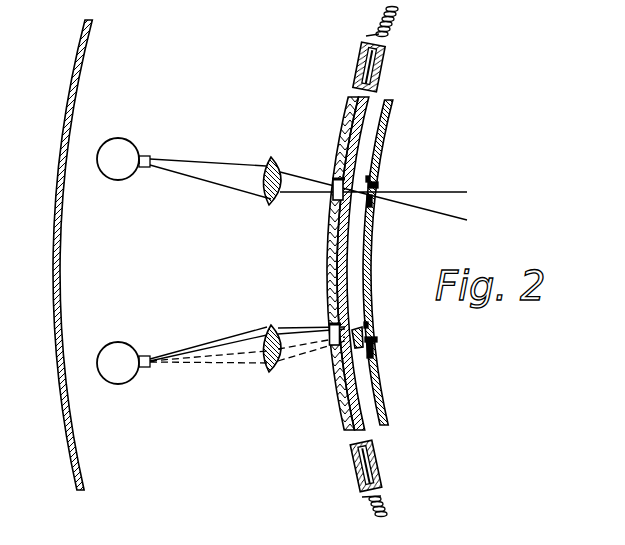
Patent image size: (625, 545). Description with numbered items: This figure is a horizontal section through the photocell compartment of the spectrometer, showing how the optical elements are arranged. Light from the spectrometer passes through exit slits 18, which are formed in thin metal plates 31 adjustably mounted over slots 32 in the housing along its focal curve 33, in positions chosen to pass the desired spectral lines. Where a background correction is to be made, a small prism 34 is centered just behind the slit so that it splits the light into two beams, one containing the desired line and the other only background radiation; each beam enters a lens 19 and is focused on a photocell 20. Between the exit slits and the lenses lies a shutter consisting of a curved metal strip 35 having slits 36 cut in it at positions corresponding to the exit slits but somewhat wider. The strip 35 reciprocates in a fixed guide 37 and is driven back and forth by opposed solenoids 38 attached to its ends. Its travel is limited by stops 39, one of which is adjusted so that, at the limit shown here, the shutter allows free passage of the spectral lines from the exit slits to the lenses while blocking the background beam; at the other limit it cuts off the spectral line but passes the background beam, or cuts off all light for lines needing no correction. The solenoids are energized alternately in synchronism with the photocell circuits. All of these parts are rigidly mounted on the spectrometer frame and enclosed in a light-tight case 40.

The light-tight case 40 is at (72, 77).
The photocell 20 is at (131, 126).
The lens 19 is at (268, 158).
The fixed guide 37 is at (347, 133).
The curved metal strip 35 is at (357, 98).
The slits 36 is at (337, 178).
The focal curve 33 is at (385, 133).
The slots 32 is at (379, 186).
The thin metal plates 31 is at (368, 178).
The exit slits 18 is at (372, 198).
The prism 34 is at (368, 345).
The stops 39 is at (384, 72).
The solenoids 38 is at (394, 17).